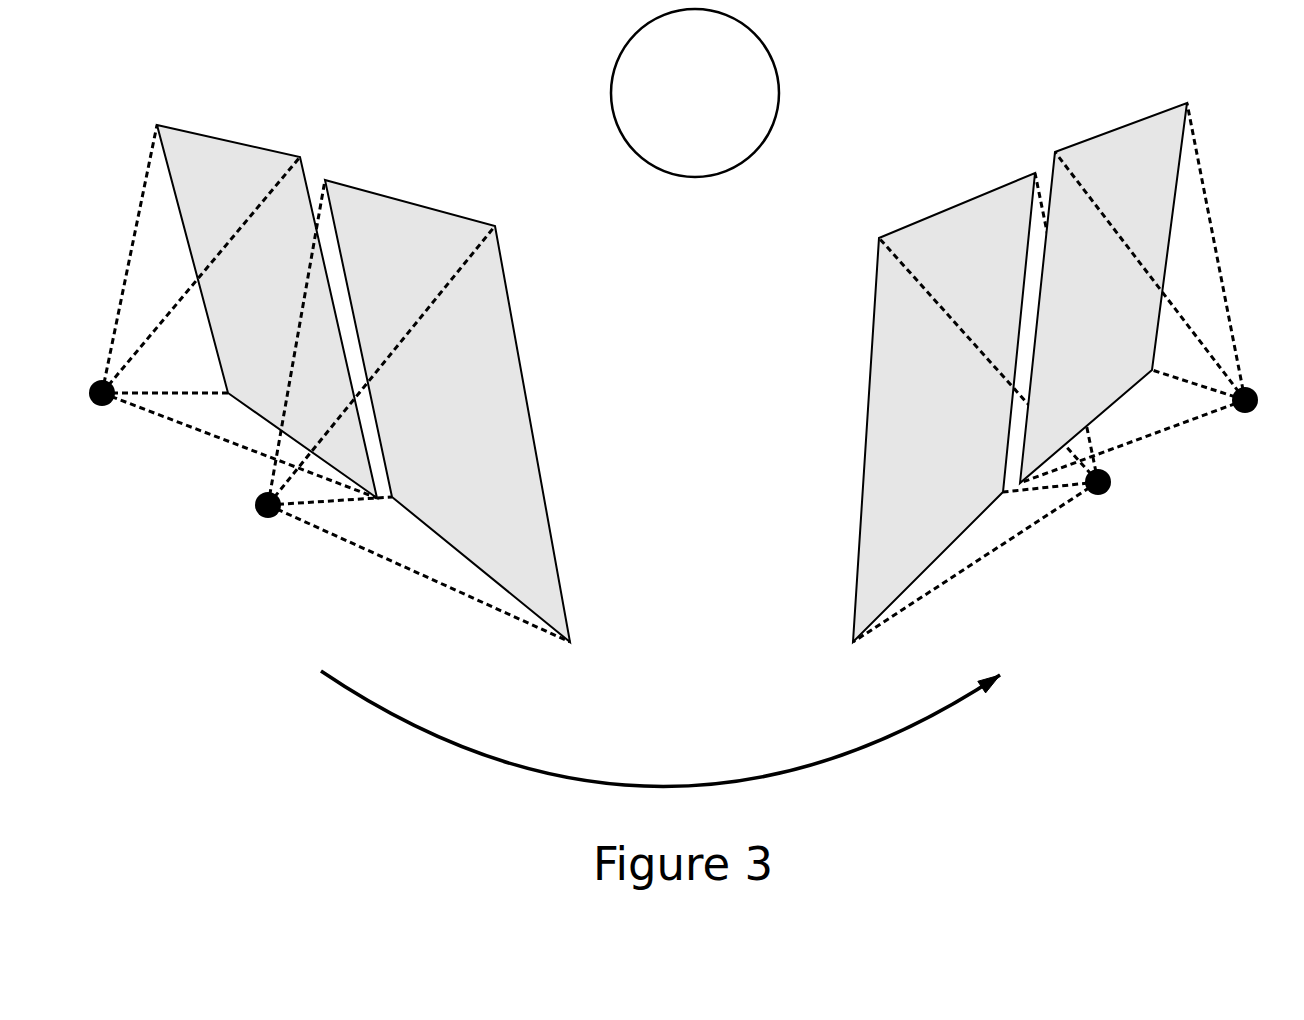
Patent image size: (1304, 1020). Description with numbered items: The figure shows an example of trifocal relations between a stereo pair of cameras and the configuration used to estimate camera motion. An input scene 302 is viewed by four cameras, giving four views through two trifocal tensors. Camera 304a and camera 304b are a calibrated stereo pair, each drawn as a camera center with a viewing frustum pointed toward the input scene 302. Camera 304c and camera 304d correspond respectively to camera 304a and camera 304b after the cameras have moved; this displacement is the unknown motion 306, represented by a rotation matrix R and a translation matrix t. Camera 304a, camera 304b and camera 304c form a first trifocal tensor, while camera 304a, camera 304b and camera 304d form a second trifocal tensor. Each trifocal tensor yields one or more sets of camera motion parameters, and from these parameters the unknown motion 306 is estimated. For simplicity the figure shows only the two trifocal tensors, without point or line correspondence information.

The input scene 302 is at (695, 133).
The camera 304a is at (208, 320).
The camera 304b is at (397, 411).
The camera 304c is at (1003, 407).
The camera 304d is at (1162, 317).
The unknown motion (R, T) 306 is at (665, 765).